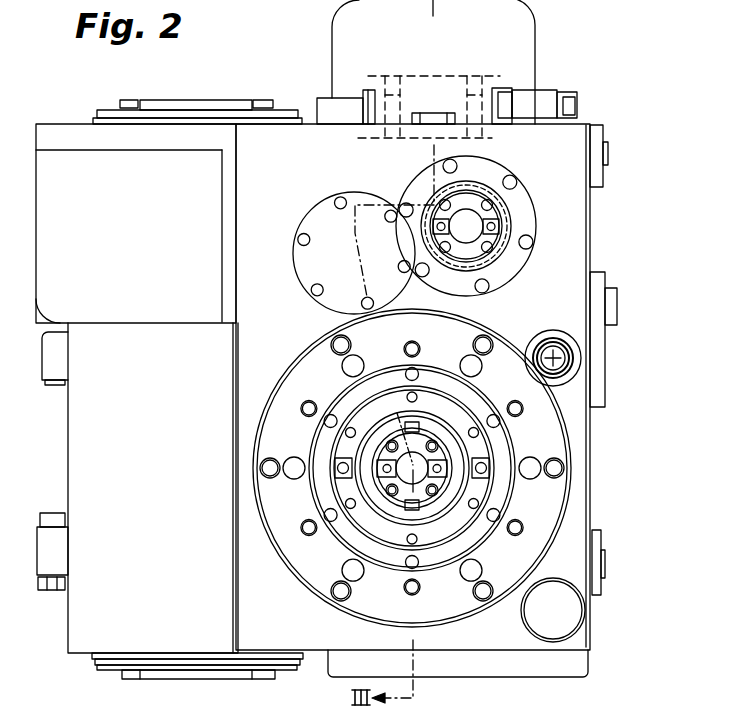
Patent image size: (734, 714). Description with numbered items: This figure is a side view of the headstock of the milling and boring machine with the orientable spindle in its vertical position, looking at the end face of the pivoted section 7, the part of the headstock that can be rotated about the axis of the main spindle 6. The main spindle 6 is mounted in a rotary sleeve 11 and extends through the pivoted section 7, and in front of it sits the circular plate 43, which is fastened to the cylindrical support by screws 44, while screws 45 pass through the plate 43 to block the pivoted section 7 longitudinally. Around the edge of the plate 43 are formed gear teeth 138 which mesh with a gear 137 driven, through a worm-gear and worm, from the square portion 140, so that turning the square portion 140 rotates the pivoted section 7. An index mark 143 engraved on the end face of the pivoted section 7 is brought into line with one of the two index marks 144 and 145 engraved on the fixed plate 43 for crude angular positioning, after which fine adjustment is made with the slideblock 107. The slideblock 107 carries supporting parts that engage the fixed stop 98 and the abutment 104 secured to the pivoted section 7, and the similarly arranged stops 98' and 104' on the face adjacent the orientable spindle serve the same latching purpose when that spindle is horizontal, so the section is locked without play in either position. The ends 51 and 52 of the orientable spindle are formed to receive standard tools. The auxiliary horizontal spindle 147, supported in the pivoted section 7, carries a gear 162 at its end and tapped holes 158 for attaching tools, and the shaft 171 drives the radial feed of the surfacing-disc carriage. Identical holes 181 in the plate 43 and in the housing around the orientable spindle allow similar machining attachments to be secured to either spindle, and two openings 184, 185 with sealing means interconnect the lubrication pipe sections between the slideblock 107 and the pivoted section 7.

The pivoted section 7 is at (560, 135).
The end of orientable spindle 52 is at (172, 106).
The fixed stop 98 is at (334, 95).
The slideblock 107 is at (523, 30).
The opening 184 is at (392, 76).
The opening 185 is at (472, 76).
The abutment 104 is at (543, 88).
The gear 162 is at (495, 205).
The auxiliary horizontal spindle 147 is at (476, 220).
The tapped holes 158 is at (495, 248).
The square portion 140 is at (617, 319).
The circular plate 43 is at (533, 505).
The screws 45 is at (483, 336).
The screws 44 is at (531, 456).
The index mark 145 is at (497, 587).
The holes 181 is at (310, 399).
The rotary sleeve 11 is at (365, 482).
The main spindle 6 is at (393, 500).
The gear teeth 138 is at (517, 341).
The index mark 144 is at (541, 371).
The index mark 143 is at (556, 384).
The gear 137 is at (573, 379).
The shaft 171 is at (575, 617).
The end of orientable spindle 51 is at (107, 669).
The stop 98' is at (50, 374).
The stop 104' is at (48, 538).